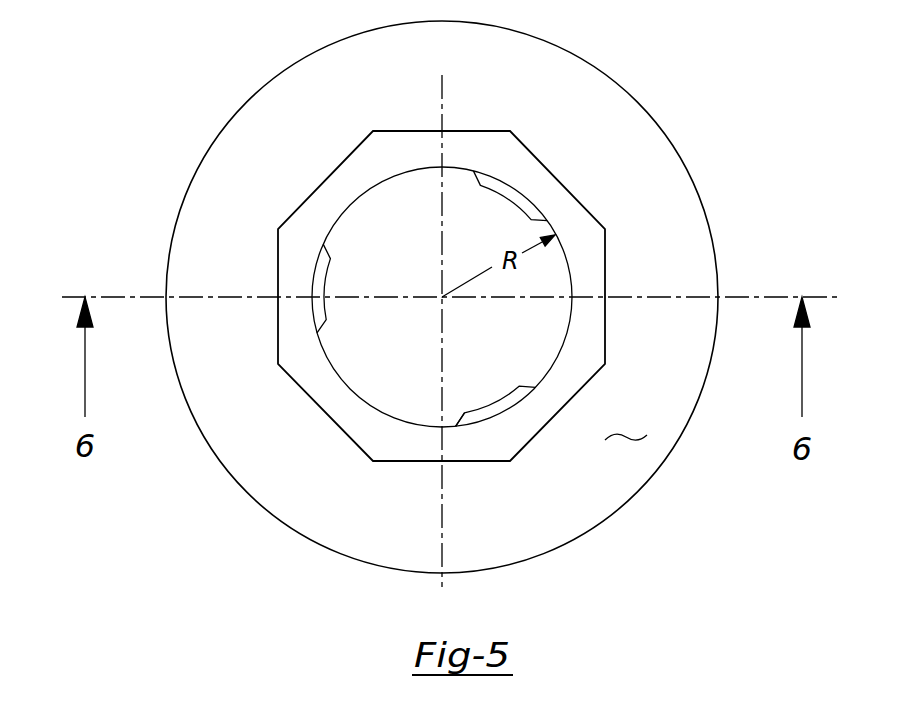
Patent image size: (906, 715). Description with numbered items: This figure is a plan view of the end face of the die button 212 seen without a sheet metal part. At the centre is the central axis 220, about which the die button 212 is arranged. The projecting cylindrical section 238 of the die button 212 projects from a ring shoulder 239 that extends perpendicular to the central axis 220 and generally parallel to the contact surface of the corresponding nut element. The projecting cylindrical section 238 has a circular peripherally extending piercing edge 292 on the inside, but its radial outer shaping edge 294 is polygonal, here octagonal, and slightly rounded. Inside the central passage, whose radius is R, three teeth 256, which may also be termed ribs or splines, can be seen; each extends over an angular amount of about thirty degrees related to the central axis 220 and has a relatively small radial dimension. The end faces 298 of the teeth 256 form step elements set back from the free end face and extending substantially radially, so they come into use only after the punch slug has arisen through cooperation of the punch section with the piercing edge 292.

The die button 212 is at (663, 121).
The projecting cylindrical section 238 is at (328, 400).
The circular peripherally extending piercing edge 292 is at (333, 363).
The teeth 256 is at (487, 187).
The end faces of the teeth 298 is at (467, 413).
The central axis 220 is at (442, 297).
The radial outer shaping edge 294 is at (492, 461).
The ring shoulder 239 is at (626, 422).